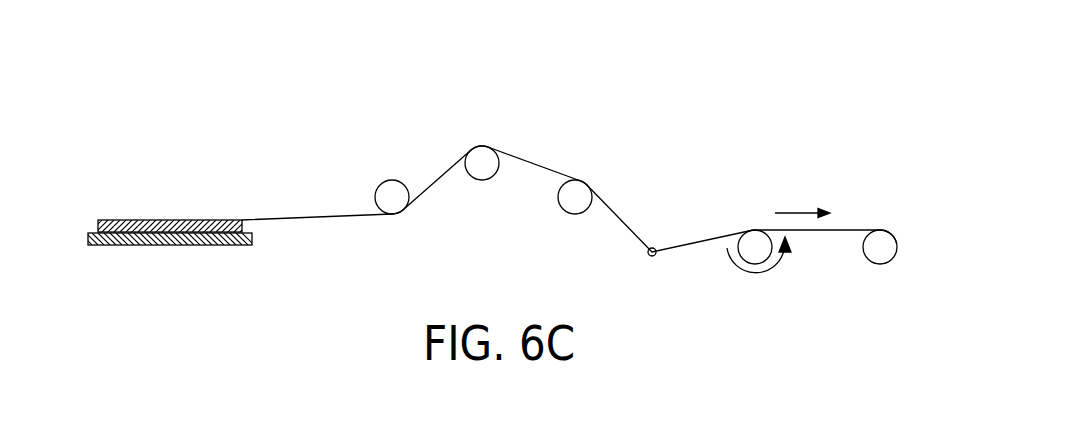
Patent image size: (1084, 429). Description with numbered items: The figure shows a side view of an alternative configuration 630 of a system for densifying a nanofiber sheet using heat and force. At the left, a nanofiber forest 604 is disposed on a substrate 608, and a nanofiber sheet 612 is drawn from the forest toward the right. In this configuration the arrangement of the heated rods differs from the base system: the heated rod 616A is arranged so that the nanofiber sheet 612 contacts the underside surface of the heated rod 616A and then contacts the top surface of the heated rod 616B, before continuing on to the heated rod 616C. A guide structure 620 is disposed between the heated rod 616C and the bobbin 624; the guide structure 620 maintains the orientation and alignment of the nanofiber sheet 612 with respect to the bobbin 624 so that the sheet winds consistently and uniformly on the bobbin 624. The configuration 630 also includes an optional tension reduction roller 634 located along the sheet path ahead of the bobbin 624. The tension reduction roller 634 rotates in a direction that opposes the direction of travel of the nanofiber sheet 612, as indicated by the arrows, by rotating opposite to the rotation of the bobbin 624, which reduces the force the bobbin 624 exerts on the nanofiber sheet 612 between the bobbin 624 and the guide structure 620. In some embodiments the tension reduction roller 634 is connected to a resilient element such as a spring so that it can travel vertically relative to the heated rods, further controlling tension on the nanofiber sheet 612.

The nanofiber forest 604 is at (140, 221).
The substrate 608 is at (132, 246).
The nanofiber sheet 612 is at (302, 217).
The heated rod 616A is at (393, 180).
The heated rod 616B is at (482, 180).
The heated rod 616C is at (575, 214).
The guide structure 620 is at (653, 247).
The bobbin 624 is at (898, 245).
The alternative configuration 630 is at (803, 182).
The tension reduction roller 634 is at (755, 229).